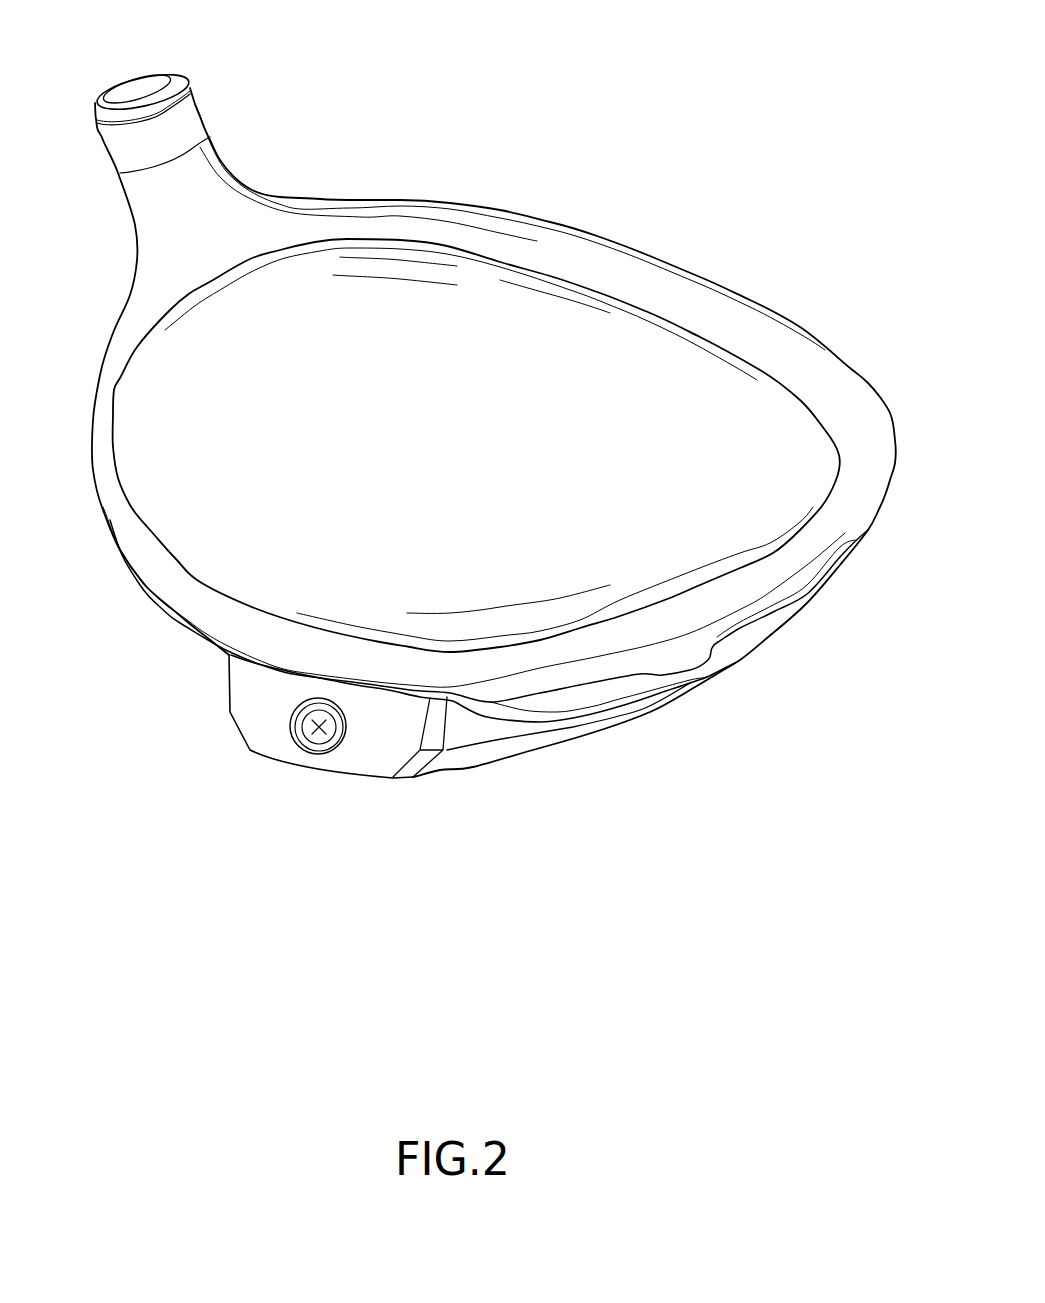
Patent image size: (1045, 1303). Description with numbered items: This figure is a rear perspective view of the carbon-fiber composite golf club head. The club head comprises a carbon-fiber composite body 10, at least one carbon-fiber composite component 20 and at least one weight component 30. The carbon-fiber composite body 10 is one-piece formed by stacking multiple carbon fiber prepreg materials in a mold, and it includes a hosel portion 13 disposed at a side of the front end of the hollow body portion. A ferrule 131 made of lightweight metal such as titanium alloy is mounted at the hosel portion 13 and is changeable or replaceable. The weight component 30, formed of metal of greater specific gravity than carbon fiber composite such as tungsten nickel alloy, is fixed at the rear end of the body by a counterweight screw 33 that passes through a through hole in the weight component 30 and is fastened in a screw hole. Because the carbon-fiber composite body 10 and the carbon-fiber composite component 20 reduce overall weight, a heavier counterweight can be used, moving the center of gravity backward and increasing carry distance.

The carbon-fiber composite body 10 is at (847, 337).
The hosel portion 13 is at (157, 198).
The ferrule 131 is at (176, 84).
The carbon-fiber composite component 20 is at (213, 515).
The weight component 30 is at (265, 745).
The counterweight screw 33 is at (323, 740).